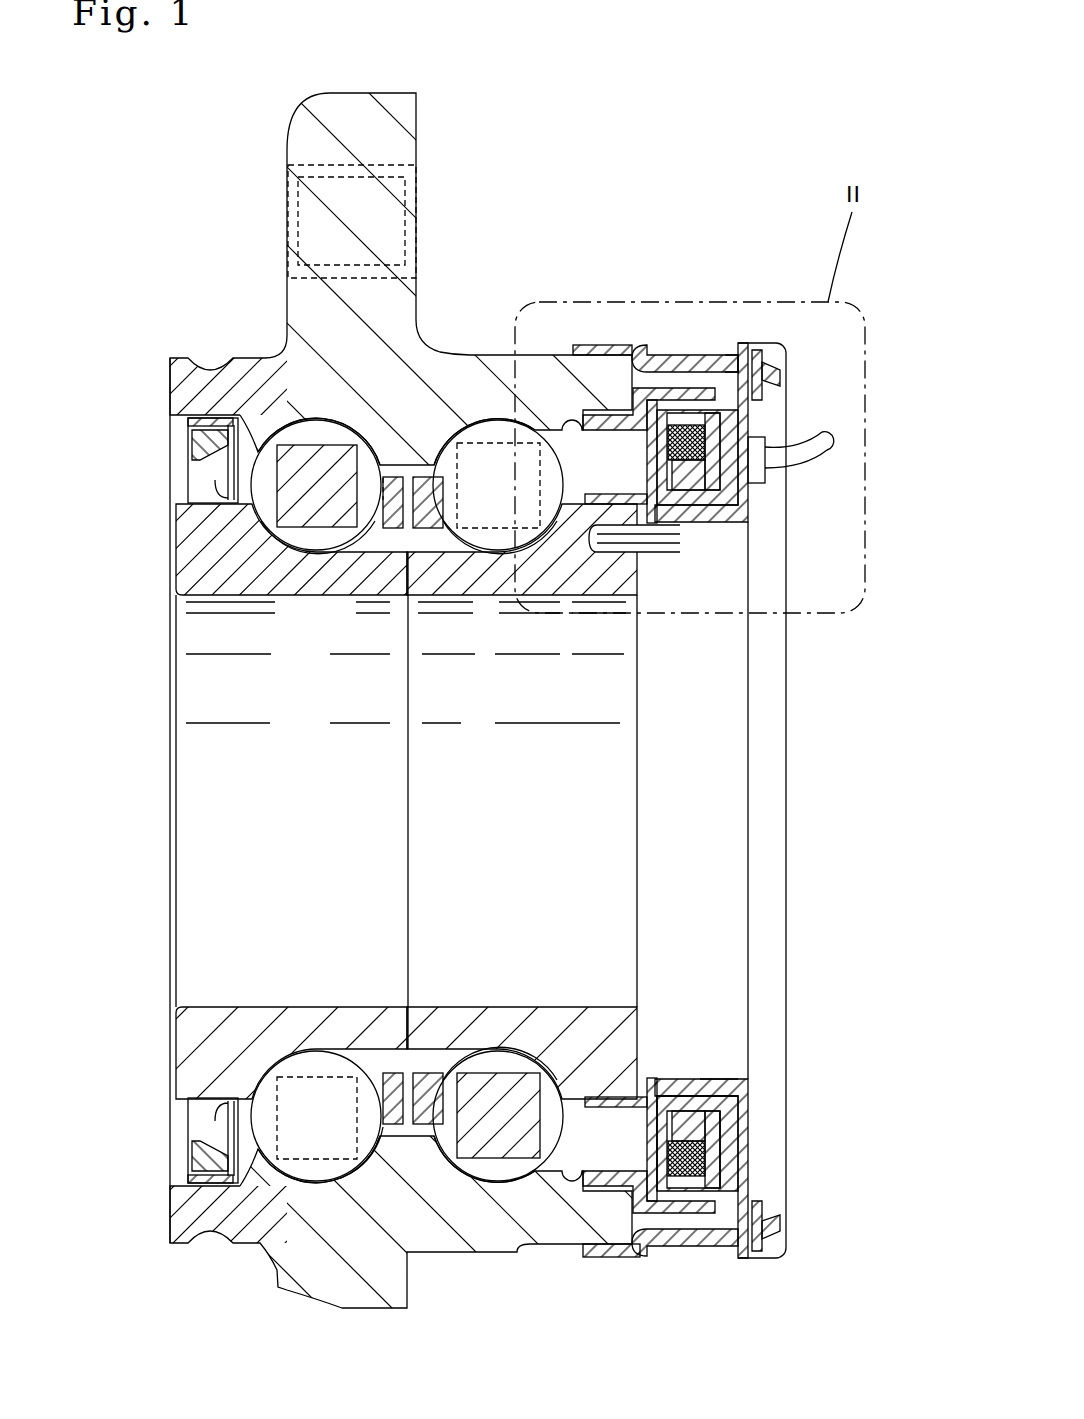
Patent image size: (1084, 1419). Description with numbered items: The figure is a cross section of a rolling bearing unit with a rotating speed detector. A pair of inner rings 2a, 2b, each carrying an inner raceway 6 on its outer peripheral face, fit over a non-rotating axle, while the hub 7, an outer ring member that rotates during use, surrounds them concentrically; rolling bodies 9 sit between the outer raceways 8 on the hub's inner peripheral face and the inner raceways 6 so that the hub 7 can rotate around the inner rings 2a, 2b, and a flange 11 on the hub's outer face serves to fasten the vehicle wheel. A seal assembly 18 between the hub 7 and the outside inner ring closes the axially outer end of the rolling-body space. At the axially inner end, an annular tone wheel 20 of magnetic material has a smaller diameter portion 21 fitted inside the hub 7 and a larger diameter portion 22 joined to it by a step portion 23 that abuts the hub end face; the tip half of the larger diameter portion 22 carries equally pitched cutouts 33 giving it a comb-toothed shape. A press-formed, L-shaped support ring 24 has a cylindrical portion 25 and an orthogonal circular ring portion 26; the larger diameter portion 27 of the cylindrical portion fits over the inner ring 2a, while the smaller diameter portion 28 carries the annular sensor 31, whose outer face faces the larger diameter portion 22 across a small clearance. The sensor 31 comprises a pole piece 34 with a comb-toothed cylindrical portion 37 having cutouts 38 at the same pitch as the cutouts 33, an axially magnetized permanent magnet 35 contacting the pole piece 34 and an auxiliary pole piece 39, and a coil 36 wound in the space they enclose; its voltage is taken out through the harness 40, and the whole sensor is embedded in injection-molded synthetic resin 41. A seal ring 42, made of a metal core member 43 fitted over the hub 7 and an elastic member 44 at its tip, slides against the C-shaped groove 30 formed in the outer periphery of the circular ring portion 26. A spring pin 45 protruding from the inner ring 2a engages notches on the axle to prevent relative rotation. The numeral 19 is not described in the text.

The inner ring 2a is at (482, 580).
The inner ring 2b is at (187, 547).
The inner raceway 6 is at (300, 548).
The hub 7 is at (470, 350).
The outer raceway 8 is at (307, 425).
The rolling body 9 is at (515, 595).
The flange 11 is at (297, 150).
The seal assembly 18 is at (193, 440).
The spacer 19 is at (388, 540).
The tone wheel 20 is at (665, 400).
The smaller diameter portion 21 is at (612, 360).
The larger diameter portion 22 is at (687, 1190).
The step portion 23 is at (642, 392).
The support ring 24 is at (747, 1147).
The cylindrical portion 25 is at (687, 522).
The circular ring portion 26 is at (748, 472).
The larger diameter portion 27 is at (596, 552).
The smaller diameter portion 28 is at (712, 1087).
The groove 30 is at (767, 350).
The sensor 31 is at (693, 478).
The cutout 33 is at (728, 358).
The pole piece 34 is at (745, 495).
The permanent magnet 35 is at (692, 1125).
The coil 36 is at (672, 1193).
The cylindrical portion 37 is at (698, 1193).
The cutout 38 is at (762, 350).
The auxiliary pole piece 39 is at (658, 1147).
The harness 40 is at (818, 447).
The synthetic resin 41 is at (673, 1103).
The seal ring 42 is at (688, 372).
The core member 43 is at (588, 345).
The elastic member 44 is at (773, 387).
The spring pin 45 is at (652, 520).